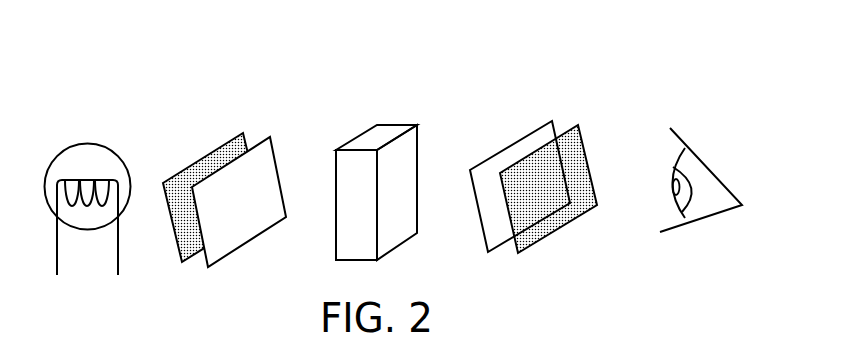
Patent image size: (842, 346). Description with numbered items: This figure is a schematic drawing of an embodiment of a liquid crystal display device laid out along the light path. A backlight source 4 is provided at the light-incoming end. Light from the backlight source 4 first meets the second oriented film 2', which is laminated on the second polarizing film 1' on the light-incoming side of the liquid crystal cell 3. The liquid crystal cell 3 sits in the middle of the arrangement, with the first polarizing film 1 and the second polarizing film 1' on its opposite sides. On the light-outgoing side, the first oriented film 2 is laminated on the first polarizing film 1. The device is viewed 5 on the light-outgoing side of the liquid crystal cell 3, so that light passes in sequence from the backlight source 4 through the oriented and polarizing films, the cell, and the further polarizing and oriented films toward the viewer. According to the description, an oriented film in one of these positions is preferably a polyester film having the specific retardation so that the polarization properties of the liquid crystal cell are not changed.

The backlight source 4 is at (95, 143).
The second oriented film 2' is at (220, 160).
The second polarizing film 1' is at (267, 162).
The liquid crystal cell 3 is at (397, 125).
The first polarizing film 1 is at (533, 148).
The first oriented film 2 is at (579, 148).
The viewing 5 is at (697, 155).